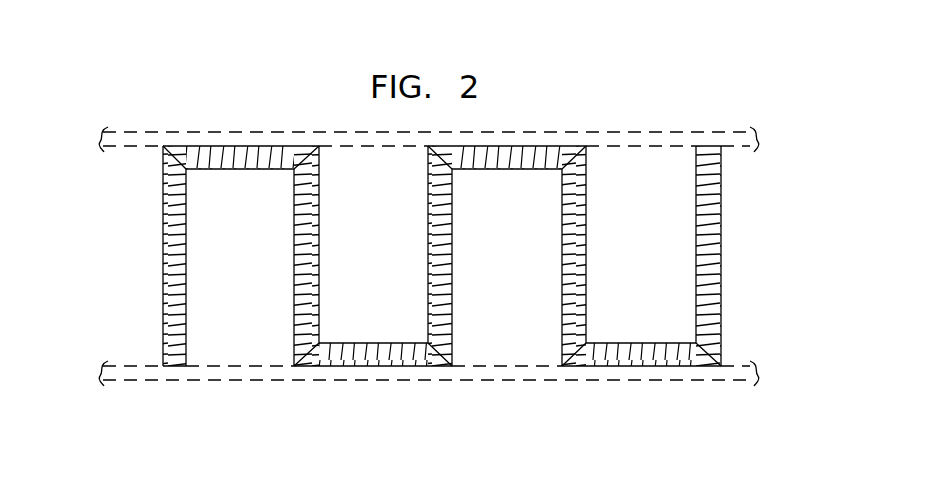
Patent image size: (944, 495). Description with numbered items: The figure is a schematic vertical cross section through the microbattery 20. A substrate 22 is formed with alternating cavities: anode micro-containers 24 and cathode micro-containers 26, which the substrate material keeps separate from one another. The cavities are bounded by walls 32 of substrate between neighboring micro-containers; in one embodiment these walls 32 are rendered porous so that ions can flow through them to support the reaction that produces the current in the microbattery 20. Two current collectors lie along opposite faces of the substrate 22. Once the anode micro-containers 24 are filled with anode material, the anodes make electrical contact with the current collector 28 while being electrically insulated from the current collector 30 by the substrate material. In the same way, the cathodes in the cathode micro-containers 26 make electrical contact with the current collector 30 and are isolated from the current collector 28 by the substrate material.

The microbattery 20 is at (257, 83).
The substrate 22 is at (719, 208).
The anode micro-containers 24 is at (362, 334).
The cathode micro-containers 26 is at (226, 336).
The current collector 28 is at (137, 133).
The current collector 30 is at (145, 375).
The walls 32 is at (432, 190).